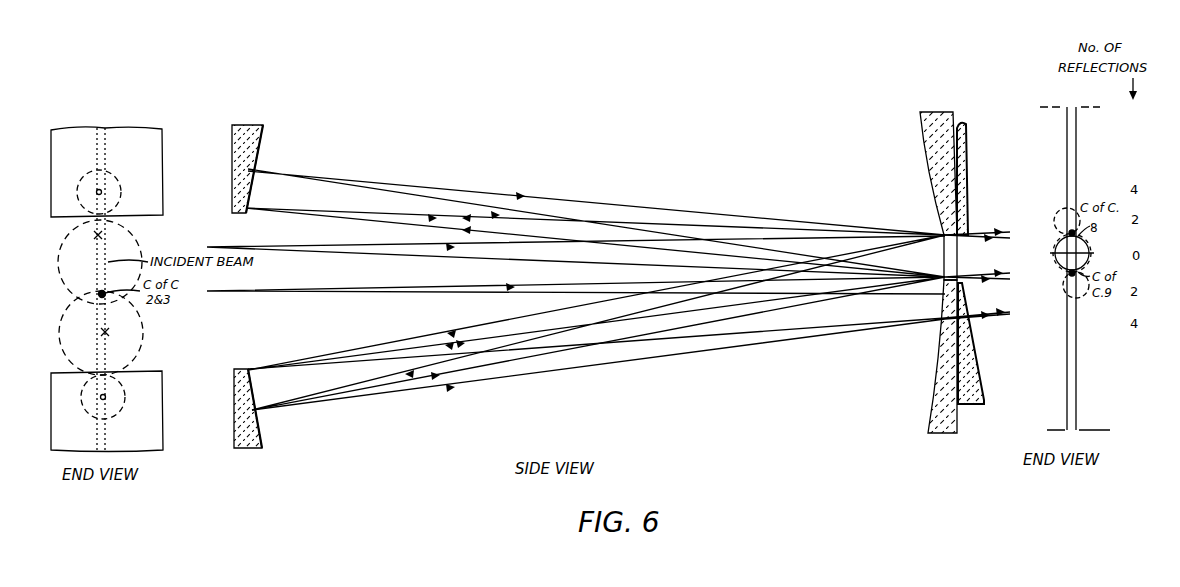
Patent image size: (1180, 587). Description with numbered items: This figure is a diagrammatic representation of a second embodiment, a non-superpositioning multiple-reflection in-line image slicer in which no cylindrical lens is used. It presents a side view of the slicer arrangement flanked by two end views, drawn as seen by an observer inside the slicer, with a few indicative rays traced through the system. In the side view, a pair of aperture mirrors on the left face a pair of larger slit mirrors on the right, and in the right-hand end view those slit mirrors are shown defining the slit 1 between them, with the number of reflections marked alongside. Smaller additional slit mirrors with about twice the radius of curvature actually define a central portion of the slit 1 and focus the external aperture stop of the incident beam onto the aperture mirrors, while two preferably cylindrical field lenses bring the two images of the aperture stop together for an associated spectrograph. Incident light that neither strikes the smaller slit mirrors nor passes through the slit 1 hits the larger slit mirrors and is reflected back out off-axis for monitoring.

The slit 1 is at (1071, 106).